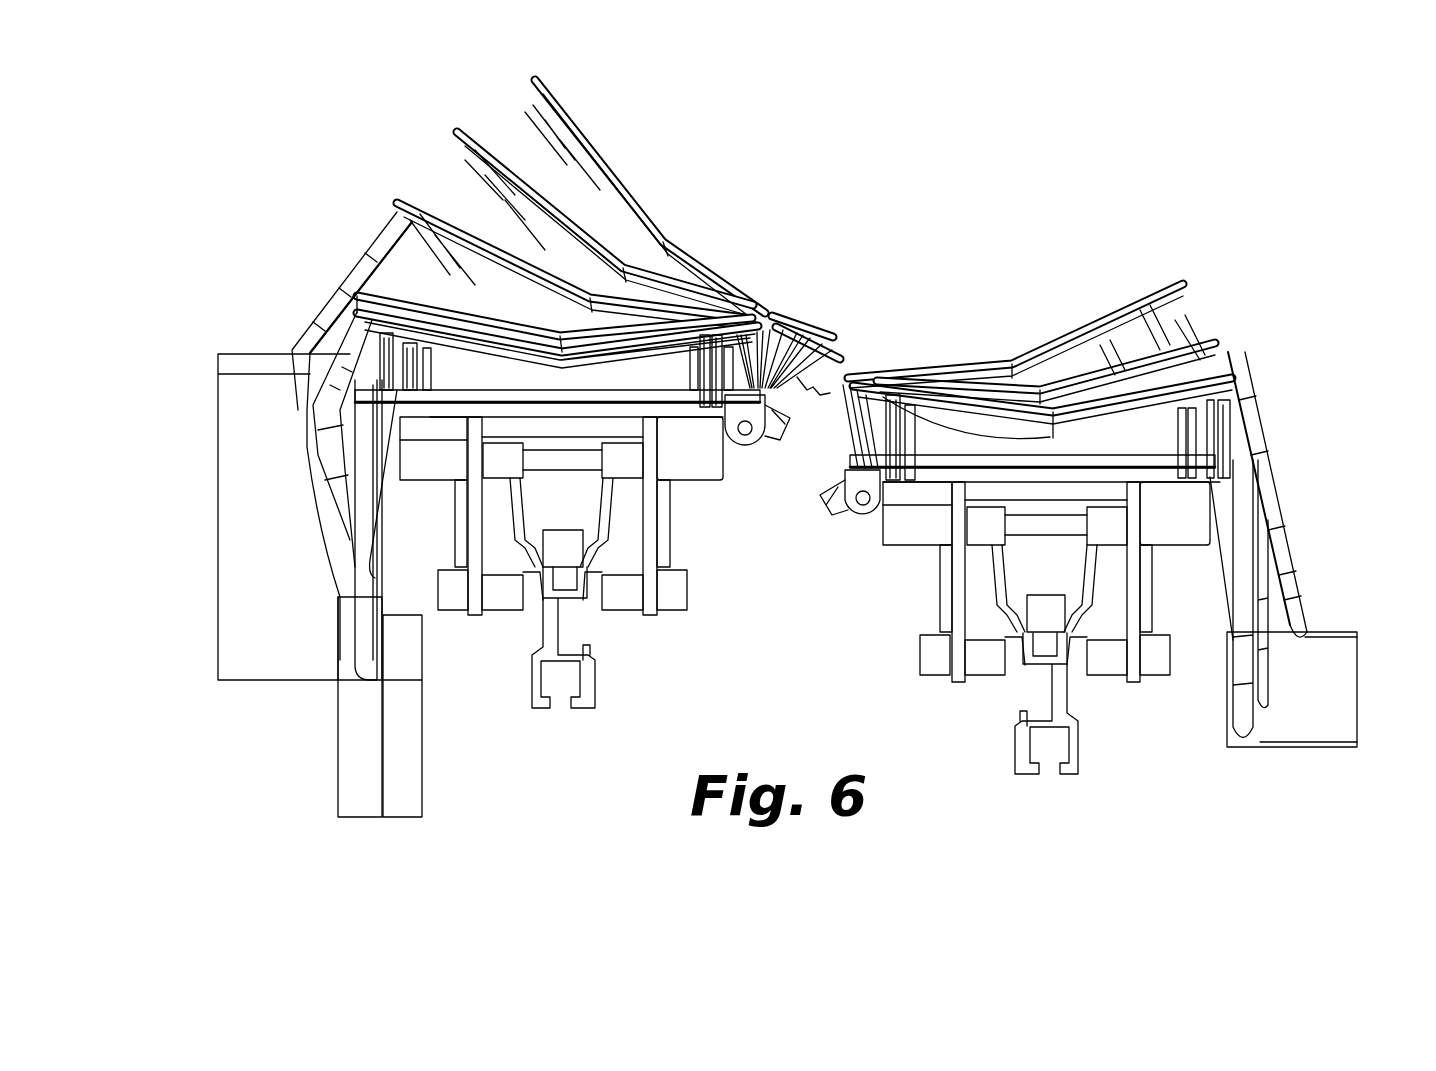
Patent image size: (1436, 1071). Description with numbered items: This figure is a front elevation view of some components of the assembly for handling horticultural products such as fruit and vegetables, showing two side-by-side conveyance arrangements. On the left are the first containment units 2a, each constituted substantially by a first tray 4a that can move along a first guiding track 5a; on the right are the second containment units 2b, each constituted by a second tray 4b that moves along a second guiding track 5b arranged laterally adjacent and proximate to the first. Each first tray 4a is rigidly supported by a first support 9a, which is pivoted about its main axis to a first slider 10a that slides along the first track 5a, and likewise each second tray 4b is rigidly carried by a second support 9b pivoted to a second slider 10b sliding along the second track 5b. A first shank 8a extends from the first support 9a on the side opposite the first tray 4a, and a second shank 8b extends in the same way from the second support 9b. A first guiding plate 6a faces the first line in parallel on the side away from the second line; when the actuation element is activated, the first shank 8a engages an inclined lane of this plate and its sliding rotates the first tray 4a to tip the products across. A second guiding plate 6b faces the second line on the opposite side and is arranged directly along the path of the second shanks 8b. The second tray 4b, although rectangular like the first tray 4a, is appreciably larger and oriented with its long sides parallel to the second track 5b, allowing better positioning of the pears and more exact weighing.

The first containment unit 2a is at (557, 193).
The first tray 4a is at (643, 300).
The first guiding track 5a is at (553, 657).
The first guiding plate 6a is at (267, 418).
The first shank 8a is at (318, 337).
The first support 9a is at (633, 388).
The first slider 10a is at (648, 535).
The second containment unit 2b is at (1092, 318).
The second tray 4b is at (922, 385).
The second guiding track 5b is at (1057, 720).
The second guiding plate 6b is at (1317, 715).
The second shank 8b is at (1288, 598).
The second support 9b is at (1138, 455).
The second slider 10b is at (957, 602).